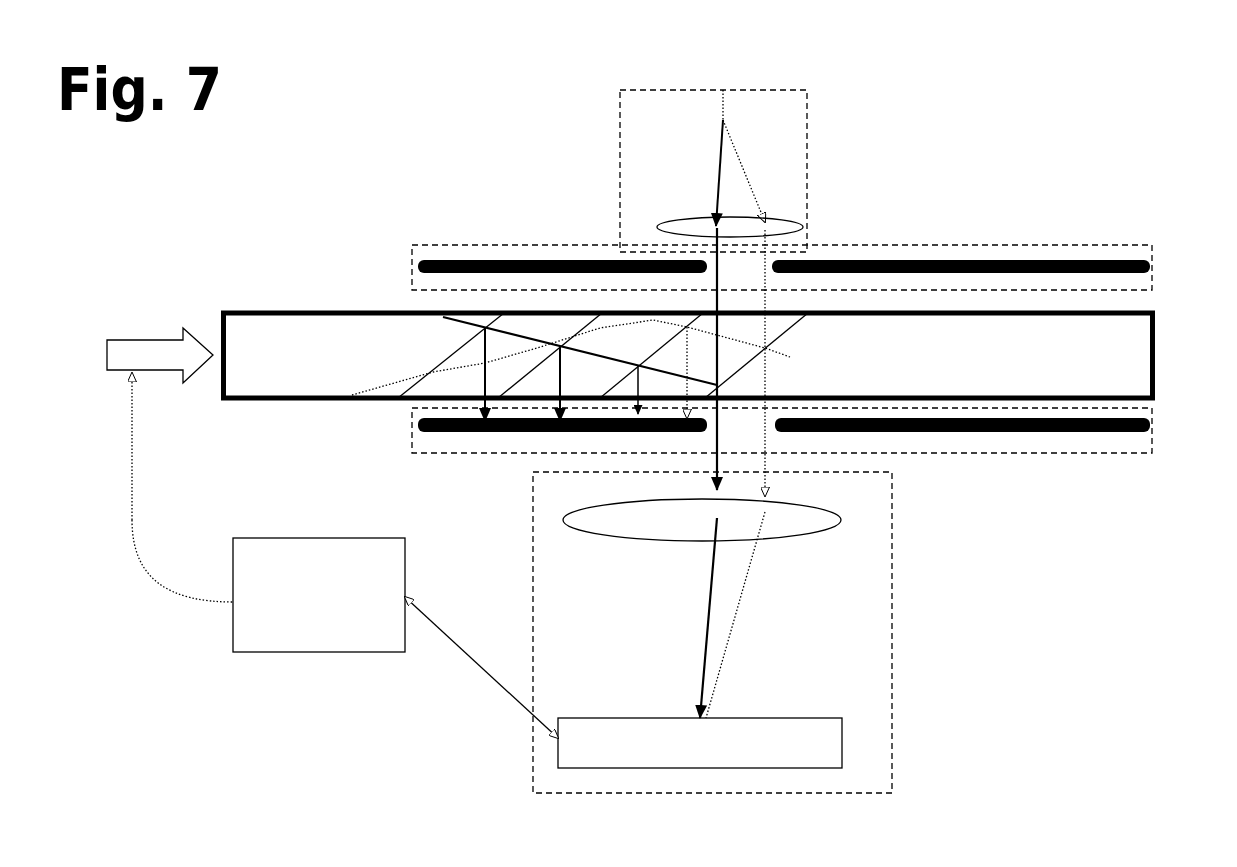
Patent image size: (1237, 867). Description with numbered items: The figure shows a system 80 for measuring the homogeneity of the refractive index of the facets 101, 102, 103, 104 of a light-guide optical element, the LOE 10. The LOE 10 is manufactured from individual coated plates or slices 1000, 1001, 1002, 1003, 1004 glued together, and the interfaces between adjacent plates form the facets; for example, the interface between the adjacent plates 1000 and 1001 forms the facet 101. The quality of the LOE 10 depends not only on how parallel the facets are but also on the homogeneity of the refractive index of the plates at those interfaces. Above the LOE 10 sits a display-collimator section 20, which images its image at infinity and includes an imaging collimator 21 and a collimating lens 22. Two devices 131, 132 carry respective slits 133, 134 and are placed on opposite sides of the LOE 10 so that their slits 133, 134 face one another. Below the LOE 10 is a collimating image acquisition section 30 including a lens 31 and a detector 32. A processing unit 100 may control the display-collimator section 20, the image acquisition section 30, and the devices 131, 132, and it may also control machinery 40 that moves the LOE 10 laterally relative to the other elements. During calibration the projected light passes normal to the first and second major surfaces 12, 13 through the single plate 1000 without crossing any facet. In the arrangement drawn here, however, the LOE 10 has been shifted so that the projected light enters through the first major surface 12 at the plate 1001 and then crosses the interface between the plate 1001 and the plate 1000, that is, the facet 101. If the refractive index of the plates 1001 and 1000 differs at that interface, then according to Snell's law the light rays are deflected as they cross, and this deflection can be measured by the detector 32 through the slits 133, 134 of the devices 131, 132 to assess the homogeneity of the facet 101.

The system 80 is at (550, 160).
The display-collimator section 20 is at (815, 147).
The imaging collimator 21 is at (757, 108).
The collimating lens 22 is at (810, 225).
The slit 133 is at (742, 267).
The device 131 is at (816, 267).
The device 132 is at (816, 430).
The slit 134 is at (745, 423).
The LOE 10 is at (688, 355).
The first major surface 12 is at (270, 312).
The second major surface 13 is at (263, 400).
The partially reflecting facet 104 is at (451, 355).
The partially reflecting facet 103 is at (550, 355).
The partially reflecting facet 102 is at (651, 355).
The partially reflecting facet 101 is at (764, 355).
The plate 1004 is at (312, 356).
The plate 1003 is at (515, 356).
The plate 1002 is at (605, 356).
The plate 1001 is at (705, 356).
The plate 1000 is at (950, 356).
The machinery 40 is at (160, 355).
The collimating image acquisition section 30 is at (892, 678).
The lens 31 is at (848, 520).
The detector 32 is at (700, 743).
The processing unit 100 is at (345, 555).